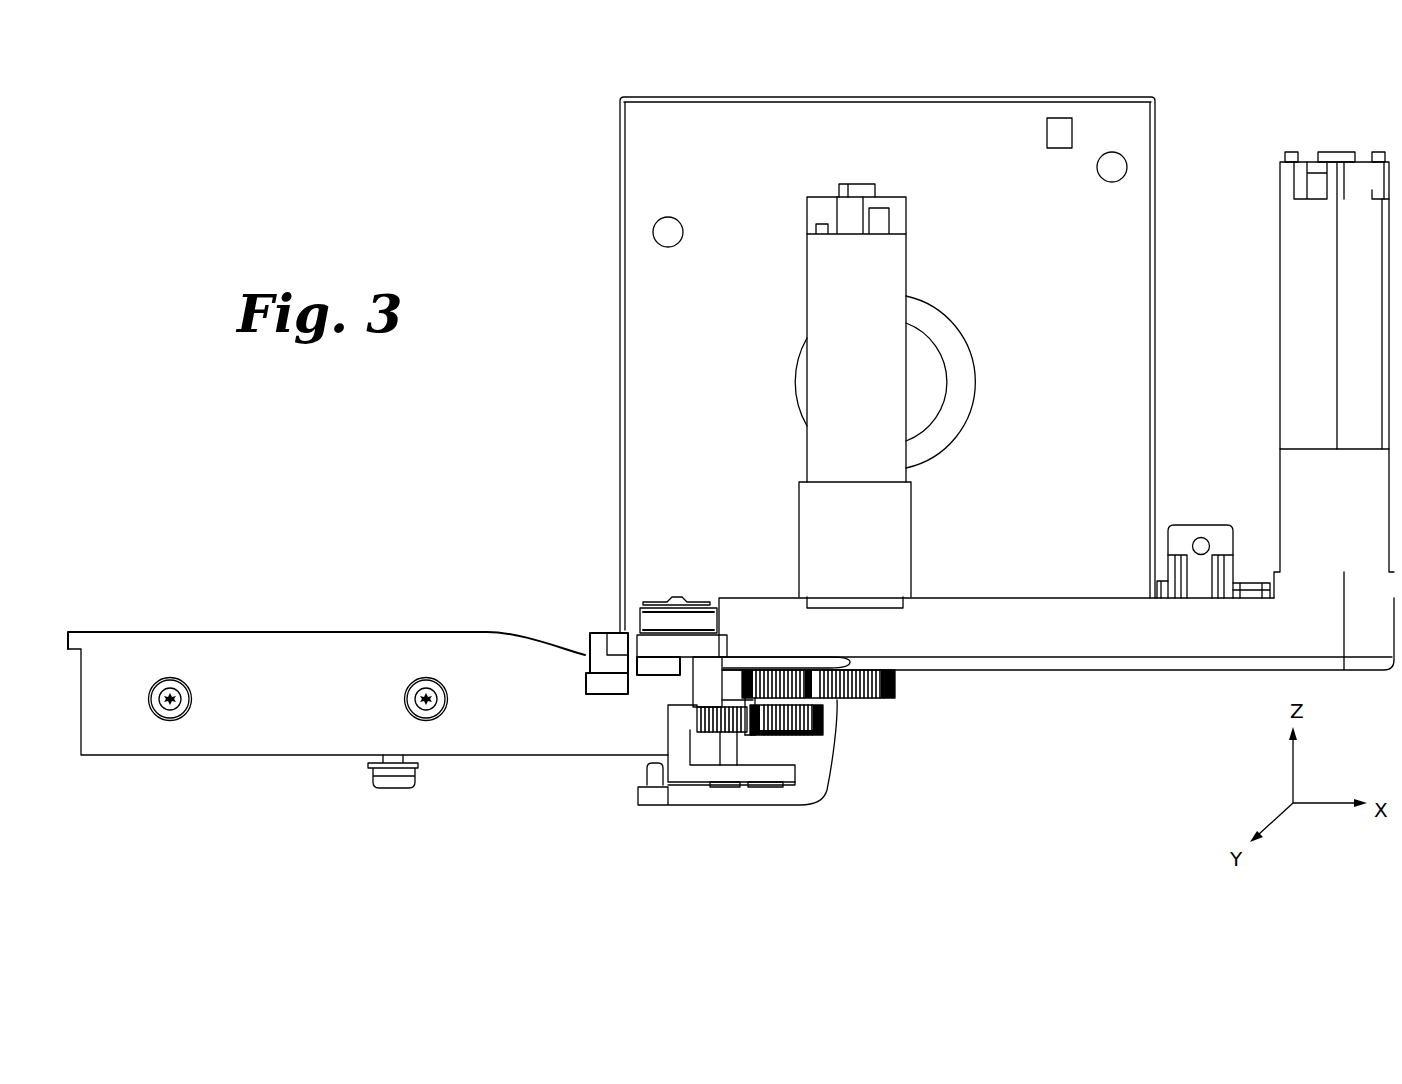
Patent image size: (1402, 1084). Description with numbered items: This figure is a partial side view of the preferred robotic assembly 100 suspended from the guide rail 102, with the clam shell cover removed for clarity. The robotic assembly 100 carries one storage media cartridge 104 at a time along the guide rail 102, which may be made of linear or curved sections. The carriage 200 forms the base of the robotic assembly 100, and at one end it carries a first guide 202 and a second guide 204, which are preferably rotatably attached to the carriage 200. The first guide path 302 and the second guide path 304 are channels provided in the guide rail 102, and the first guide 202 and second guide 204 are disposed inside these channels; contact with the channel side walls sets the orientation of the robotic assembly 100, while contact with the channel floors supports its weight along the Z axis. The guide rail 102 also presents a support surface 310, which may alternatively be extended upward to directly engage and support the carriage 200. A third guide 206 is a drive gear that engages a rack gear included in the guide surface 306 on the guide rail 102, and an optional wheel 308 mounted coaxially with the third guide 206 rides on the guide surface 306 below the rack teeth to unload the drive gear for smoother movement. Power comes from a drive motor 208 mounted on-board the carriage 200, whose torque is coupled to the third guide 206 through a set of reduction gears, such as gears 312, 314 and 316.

The robotic assembly 100 is at (1065, 89).
The guide rail 102 is at (327, 728).
The storage media cartridge 104 is at (687, 120).
The carriage 200 is at (1017, 638).
The first guide 202 is at (648, 666).
The second guide 204 is at (588, 680).
The third guide 206 is at (737, 730).
The drive motor 208 is at (882, 543).
The first guide path 302 is at (653, 677).
The second guide path 304 is at (594, 694).
The guide surface 306 is at (680, 783).
The wheel 308 is at (785, 790).
The support surface 310 is at (632, 650).
The gear 312 is at (870, 697).
The gear 314 is at (820, 717).
The gear 316 is at (813, 733).